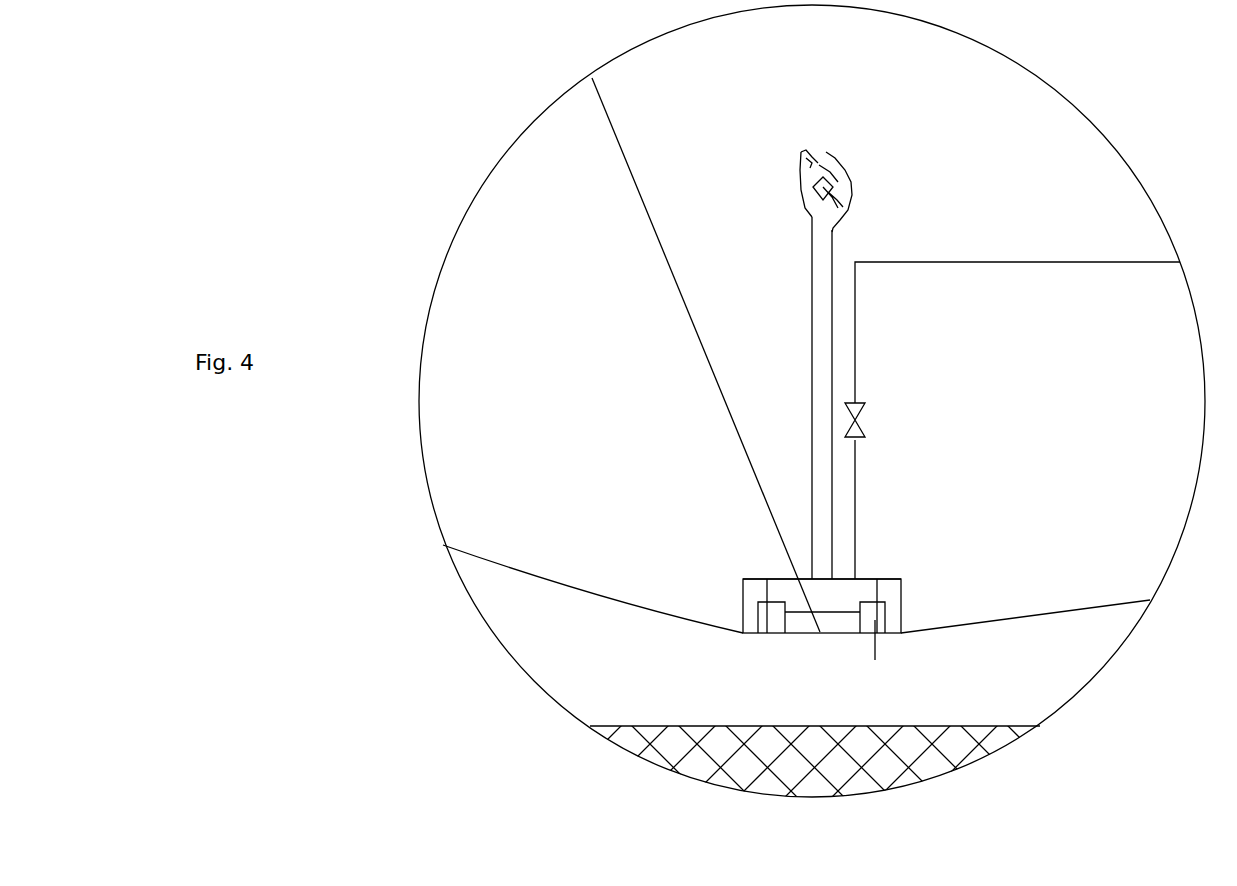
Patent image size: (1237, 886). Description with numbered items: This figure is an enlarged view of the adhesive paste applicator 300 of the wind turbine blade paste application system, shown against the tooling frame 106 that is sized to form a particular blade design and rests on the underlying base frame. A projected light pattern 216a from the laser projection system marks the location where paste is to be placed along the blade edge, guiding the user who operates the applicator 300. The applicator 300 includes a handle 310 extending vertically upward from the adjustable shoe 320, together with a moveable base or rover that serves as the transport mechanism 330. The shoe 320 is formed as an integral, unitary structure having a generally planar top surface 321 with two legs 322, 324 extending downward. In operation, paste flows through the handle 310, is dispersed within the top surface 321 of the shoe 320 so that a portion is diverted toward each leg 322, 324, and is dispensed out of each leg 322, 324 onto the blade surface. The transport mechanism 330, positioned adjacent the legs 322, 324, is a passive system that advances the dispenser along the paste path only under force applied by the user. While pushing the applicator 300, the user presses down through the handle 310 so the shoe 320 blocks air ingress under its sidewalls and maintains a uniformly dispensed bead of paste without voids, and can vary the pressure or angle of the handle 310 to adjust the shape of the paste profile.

The applicator 300 is at (812, 401).
The light pattern 216a is at (705, 360).
The handle 310 is at (812, 387).
The adjustable shoe 320 is at (831, 606).
The top surface 321 is at (782, 577).
The leg 322 is at (745, 602).
The leg 324 is at (905, 614).
The transport mechanism 330 is at (768, 625).
The tooling frame 106 is at (650, 724).